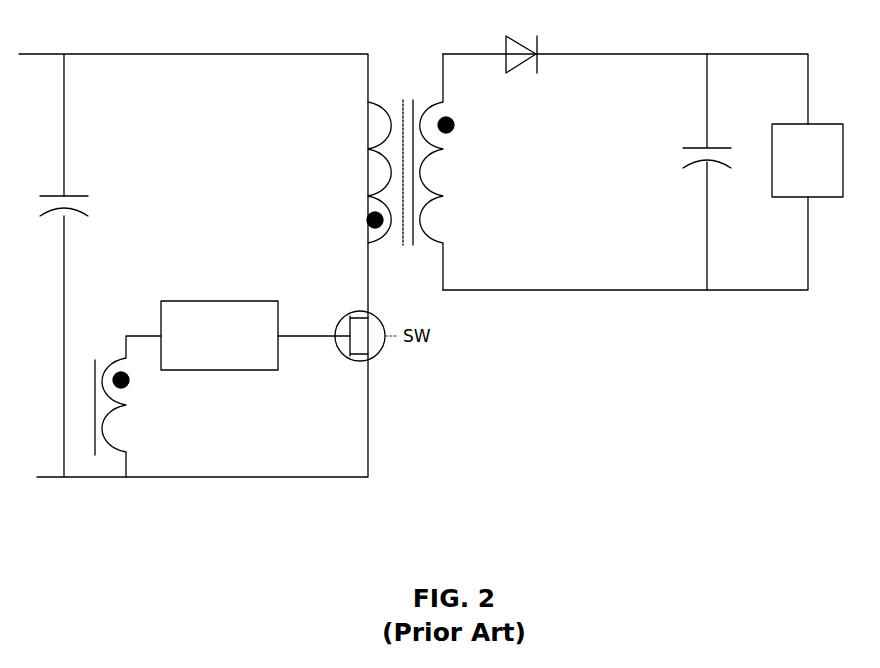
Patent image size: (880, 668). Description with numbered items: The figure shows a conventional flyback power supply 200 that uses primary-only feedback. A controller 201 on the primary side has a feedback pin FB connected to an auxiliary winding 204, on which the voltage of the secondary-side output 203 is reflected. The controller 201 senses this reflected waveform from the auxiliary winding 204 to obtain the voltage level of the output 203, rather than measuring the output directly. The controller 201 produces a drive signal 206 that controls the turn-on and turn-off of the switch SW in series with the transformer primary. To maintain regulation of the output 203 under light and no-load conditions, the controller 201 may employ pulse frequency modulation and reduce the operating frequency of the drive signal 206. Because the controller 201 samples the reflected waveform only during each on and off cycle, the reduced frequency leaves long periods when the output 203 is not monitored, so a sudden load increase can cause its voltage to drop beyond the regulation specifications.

The flyback power supply 200 is at (381, 512).
The controller 201 is at (234, 278).
The output 203 is at (641, 44).
The auxiliary winding 204 is at (139, 313).
The drive signal 206 is at (300, 334).